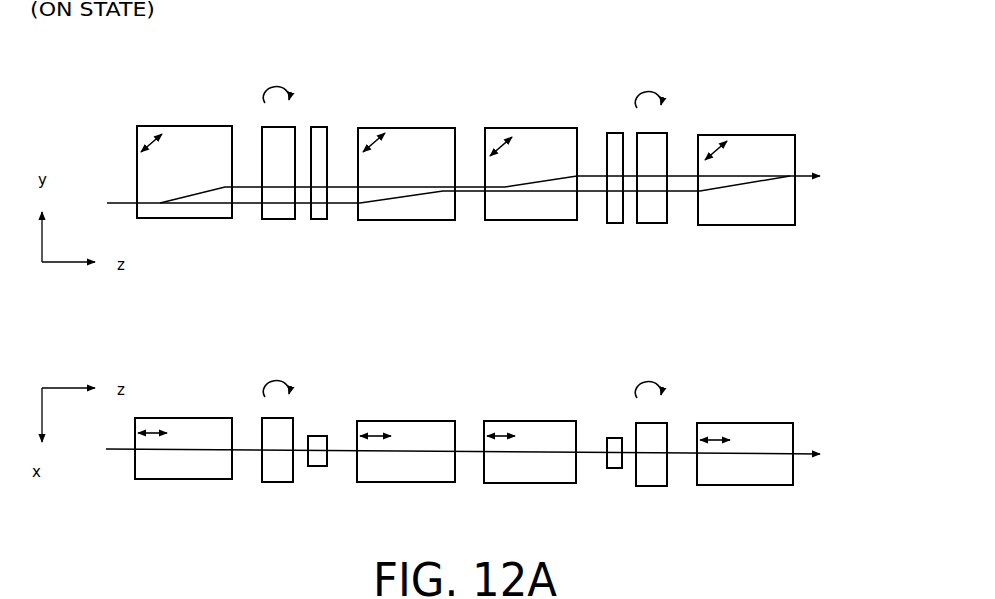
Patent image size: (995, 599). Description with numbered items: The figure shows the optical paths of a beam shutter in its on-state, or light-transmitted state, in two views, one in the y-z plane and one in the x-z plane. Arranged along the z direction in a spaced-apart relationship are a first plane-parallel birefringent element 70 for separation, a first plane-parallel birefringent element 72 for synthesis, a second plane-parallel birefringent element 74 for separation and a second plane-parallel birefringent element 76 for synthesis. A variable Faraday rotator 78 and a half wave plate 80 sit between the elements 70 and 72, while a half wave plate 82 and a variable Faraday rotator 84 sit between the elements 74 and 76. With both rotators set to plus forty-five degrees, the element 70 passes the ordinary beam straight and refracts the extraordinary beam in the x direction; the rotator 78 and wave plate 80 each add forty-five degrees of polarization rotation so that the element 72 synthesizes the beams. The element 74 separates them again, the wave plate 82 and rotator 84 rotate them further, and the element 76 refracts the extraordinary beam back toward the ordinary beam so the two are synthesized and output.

The first plane-parallel birefringent element for separation 70 is at (200, 140).
The first plane-parallel birefringent element for synthesis 72 is at (415, 142).
The second plane-parallel birefringent element for separation 74 is at (538, 145).
The second plane-parallel birefringent element for synthesis 76 is at (762, 145).
The ±45 degree variable Faraday rotator 78 is at (272, 222).
The ½ wave plate 80 is at (315, 222).
The ½ wave plate 82 is at (612, 226).
The ±45 degree variable Faraday rotator 84 is at (651, 226).